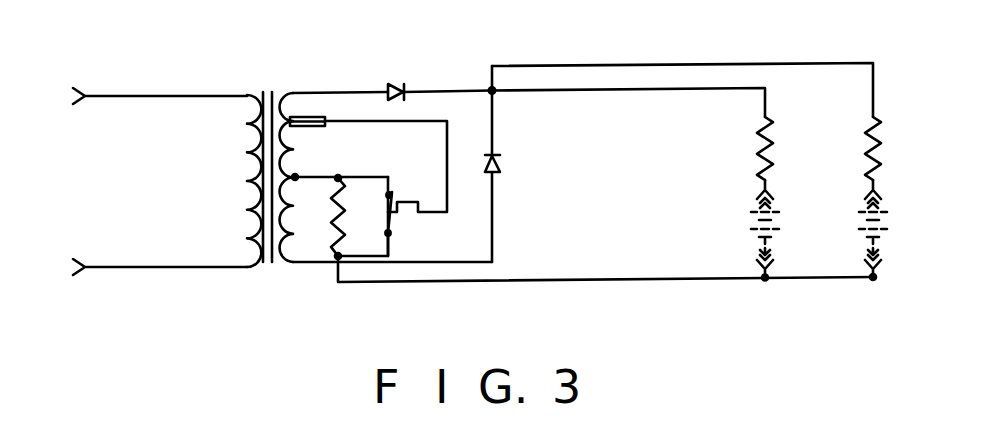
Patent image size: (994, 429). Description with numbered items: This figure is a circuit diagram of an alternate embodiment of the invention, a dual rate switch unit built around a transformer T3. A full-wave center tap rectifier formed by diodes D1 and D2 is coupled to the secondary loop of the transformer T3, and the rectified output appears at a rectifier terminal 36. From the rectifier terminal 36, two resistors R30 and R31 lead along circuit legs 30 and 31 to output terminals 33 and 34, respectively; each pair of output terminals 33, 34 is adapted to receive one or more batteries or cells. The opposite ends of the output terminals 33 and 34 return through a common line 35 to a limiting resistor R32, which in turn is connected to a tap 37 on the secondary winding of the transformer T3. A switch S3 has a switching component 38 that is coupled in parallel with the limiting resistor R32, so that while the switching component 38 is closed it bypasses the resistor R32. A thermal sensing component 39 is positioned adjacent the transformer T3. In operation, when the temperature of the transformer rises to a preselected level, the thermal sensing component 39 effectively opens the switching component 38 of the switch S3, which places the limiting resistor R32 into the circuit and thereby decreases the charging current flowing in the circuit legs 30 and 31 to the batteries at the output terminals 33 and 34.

The transformer T3 is at (263, 92).
The rectifier diode D1 is at (397, 85).
The rectifier diode D2 is at (500, 167).
The circuit leg 30 is at (578, 65).
The circuit leg 31 is at (811, 65).
The output terminal 33 is at (882, 193).
The output terminal 34 is at (776, 193).
The common return line 35 is at (388, 284).
The rectifier terminal 36 is at (490, 89).
The tap 37 is at (297, 178).
The switching component 38 is at (392, 251).
The thermal sensing component 39 is at (322, 126).
The resistor R30 is at (868, 150).
The resistor R31 is at (758, 149).
The limiting resistor R32 is at (333, 228).
The switch S3 is at (387, 212).